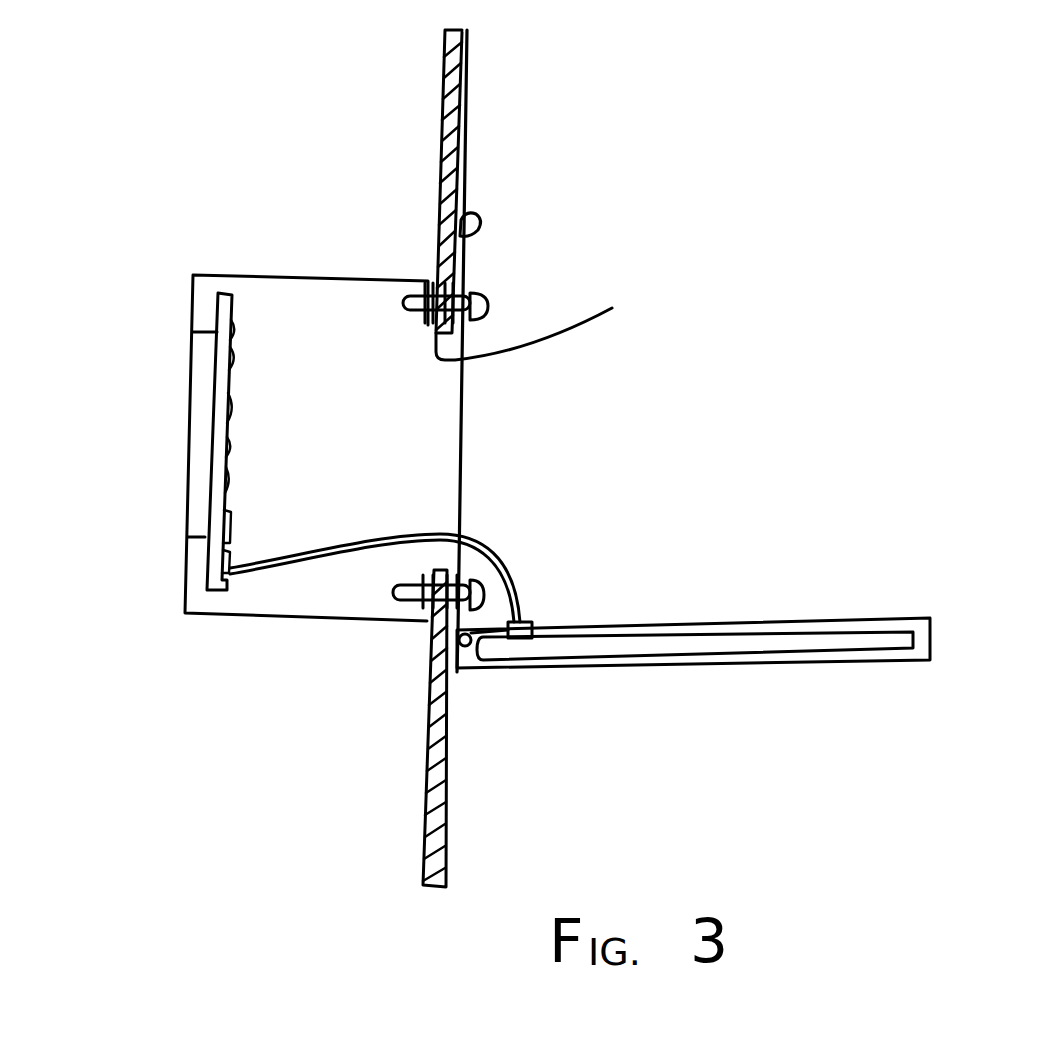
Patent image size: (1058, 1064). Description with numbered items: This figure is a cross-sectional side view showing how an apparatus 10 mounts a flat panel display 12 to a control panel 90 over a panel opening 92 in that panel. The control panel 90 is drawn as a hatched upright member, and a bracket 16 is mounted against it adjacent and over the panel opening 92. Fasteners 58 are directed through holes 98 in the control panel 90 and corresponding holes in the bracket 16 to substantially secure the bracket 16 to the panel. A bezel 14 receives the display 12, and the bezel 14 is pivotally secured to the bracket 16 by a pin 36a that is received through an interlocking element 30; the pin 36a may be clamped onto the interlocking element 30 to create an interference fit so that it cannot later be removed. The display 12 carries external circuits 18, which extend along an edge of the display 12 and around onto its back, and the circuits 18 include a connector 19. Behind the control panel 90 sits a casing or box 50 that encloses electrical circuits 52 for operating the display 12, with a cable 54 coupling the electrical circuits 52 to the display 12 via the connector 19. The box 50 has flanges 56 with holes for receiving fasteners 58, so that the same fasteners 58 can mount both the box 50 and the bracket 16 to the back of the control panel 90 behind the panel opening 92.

The apparatus 10 is at (762, 425).
The flat panel display 12 is at (755, 655).
The bezel 14 is at (885, 665).
The bracket 16 is at (462, 405).
The external circuits 18 is at (460, 655).
The connector 19 is at (530, 620).
The interlocking element 30 is at (482, 213).
The pin 36a is at (435, 622).
The box 50 is at (262, 266).
The electrical circuits 52 is at (217, 477).
The cable 54 is at (330, 557).
The flange 56 is at (420, 318).
The fastener 58 is at (486, 296).
The control panel 90 is at (472, 75).
The panel opening 92 is at (569, 316).
The hole 98 is at (437, 275).